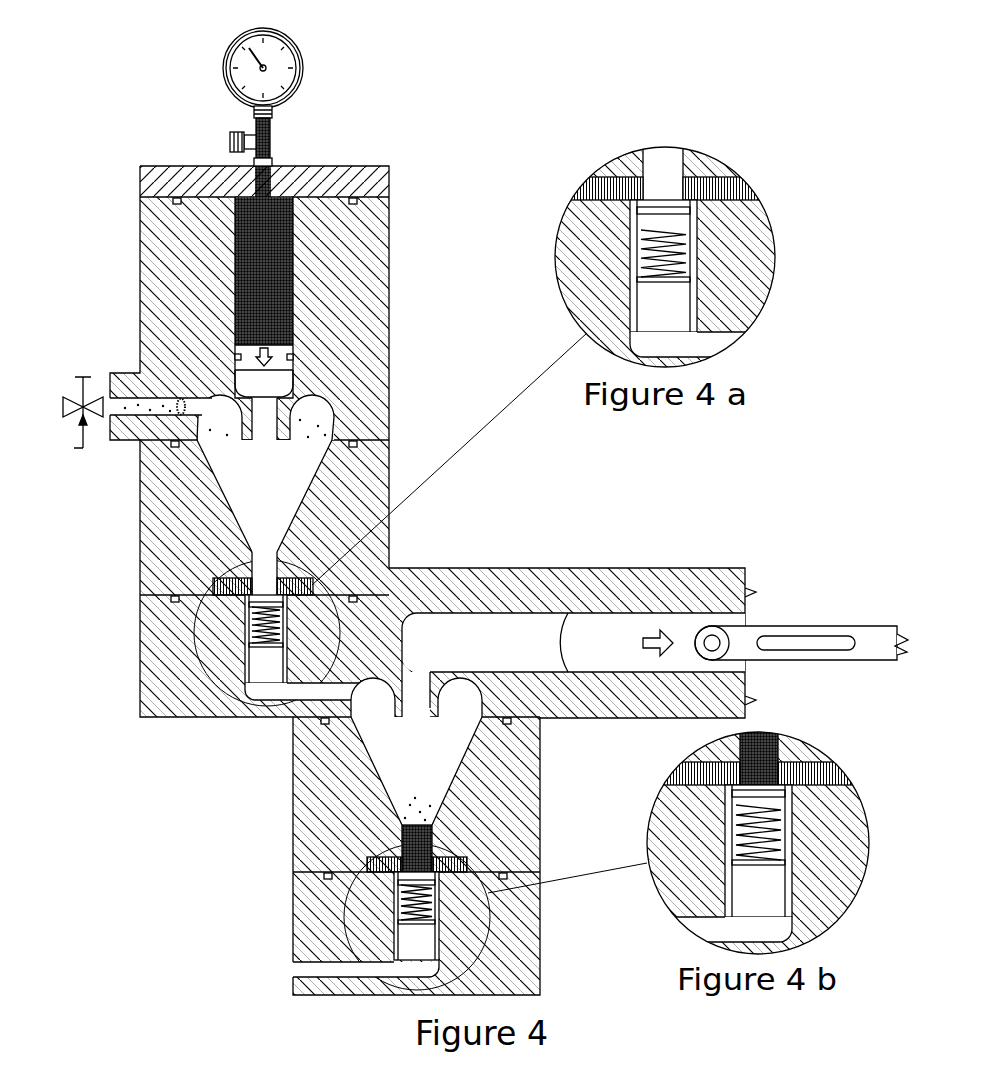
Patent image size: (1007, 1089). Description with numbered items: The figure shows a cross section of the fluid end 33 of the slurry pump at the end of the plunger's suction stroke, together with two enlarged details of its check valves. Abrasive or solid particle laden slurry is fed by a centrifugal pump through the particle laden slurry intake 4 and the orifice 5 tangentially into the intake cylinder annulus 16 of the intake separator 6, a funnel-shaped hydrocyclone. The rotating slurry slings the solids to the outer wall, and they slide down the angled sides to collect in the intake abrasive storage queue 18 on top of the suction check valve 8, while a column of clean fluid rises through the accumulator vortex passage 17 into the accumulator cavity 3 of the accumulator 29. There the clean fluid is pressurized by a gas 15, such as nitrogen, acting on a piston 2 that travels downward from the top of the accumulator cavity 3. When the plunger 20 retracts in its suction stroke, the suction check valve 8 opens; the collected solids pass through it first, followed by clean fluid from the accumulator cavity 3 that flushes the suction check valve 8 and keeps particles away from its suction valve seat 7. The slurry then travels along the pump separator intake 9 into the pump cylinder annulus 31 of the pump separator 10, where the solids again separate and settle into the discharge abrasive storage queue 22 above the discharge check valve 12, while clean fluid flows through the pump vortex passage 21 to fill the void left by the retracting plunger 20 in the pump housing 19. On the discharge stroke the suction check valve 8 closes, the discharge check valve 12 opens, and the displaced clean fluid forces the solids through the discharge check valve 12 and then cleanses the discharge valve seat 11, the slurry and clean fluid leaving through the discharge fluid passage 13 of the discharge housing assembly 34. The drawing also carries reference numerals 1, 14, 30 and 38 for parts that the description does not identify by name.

In FIG. 4, the upper housing body 1 is at (166, 216).
In FIG. 4, the piston 2 is at (254, 354).
In FIG. 4, the accumulator cavity 3 is at (254, 382).
In FIG. 4, the particle laden slurry intake 4 is at (45, 403).
In FIG. 4, the orifice 5 is at (178, 420).
In FIG. 4, the intake separator 6 is at (224, 497).
In FIG. 4, the suction valve seat 7 is at (230, 585).
In FIG. 4a, the suction valve seat 7 is at (607, 191).
In FIG. 4, the suction check valve 8 is at (268, 607).
In FIG. 4a, the suction check valve 8 is at (664, 220).
In FIG. 4, the pump separator intake 9 is at (340, 703).
In FIG. 4, the pump separator 10 is at (376, 781).
In FIG. 4, the discharge valve seat 11 is at (367, 857).
In FIG. 4b, the discharge valve seat 11 is at (704, 776).
In FIG. 4, the discharge check valve 12 is at (416, 885).
In FIG. 4b, the discharge check valve 12 is at (752, 800).
In FIG. 4, the discharge fluid passage 13 is at (290, 966).
In FIG. 4, the top cover plate 14 is at (366, 183).
In FIG. 4, the gas 15 is at (286, 213).
In FIG. 4, the intake cylinder annulus 16 is at (334, 422).
In FIG. 4, the accumulator vortex passage 17 is at (268, 444).
In FIG. 4, the intake abrasive storage queue 18 is at (278, 553).
In FIG. 4a, the intake abrasive storage queue 18 is at (685, 168).
In FIG. 4, the pump housing 19 is at (470, 582).
In FIG. 4, the plunger 20 is at (618, 631).
In FIG. 4, the pump vortex passage 21 is at (419, 714).
In FIG. 4, the discharge abrasive storage queue 22 is at (434, 845).
In FIG. 4b, the discharge abrasive storage queue 22 is at (774, 756).
In FIG. 4, the accumulator 29 is at (298, 328).
In FIG. 4, the pressure gauge 30 is at (307, 68).
In FIG. 4, the pump cylinder annulus 31 is at (498, 716).
In FIG. 4, the fluid end 33 is at (141, 525).
In FIG. 4, the discharge housing assembly 34 is at (519, 932).
In FIG. 4, the valve stem 38 is at (68, 419).